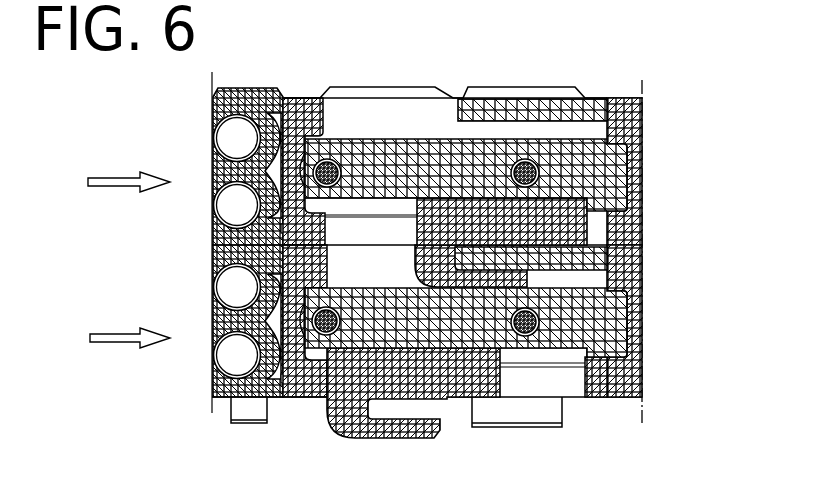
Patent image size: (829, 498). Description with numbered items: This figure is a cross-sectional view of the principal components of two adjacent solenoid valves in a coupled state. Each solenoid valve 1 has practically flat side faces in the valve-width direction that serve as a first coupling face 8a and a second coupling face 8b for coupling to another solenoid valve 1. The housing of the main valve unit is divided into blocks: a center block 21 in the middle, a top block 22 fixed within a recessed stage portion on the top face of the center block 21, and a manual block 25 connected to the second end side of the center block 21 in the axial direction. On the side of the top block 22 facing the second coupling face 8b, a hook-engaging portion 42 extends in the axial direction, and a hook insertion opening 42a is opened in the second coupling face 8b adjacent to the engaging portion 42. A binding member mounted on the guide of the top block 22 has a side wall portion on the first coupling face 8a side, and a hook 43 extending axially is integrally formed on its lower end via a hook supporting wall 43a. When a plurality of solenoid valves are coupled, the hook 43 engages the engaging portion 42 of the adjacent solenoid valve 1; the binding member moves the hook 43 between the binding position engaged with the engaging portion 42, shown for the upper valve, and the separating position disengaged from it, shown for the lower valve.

The solenoid valve 1 is at (121, 259).
The first coupling face 8a is at (643, 260).
The second coupling face 8b is at (623, 97).
The center block 21 is at (628, 125).
The top block 22 is at (550, 177).
The manual block 25 is at (243, 103).
The hook-engaging portion 42 is at (521, 128).
The hook insertion opening 42a is at (435, 110).
The hook 43 is at (393, 430).
The hook supporting wall 43a is at (553, 223).